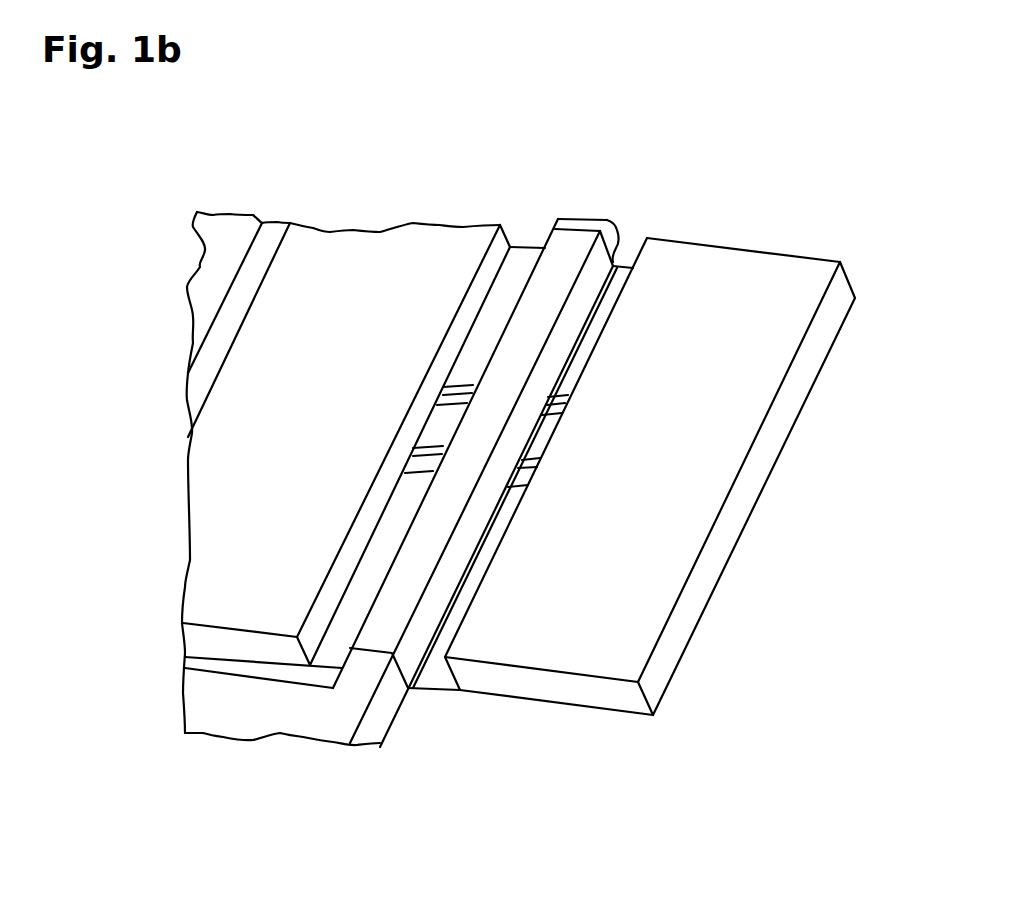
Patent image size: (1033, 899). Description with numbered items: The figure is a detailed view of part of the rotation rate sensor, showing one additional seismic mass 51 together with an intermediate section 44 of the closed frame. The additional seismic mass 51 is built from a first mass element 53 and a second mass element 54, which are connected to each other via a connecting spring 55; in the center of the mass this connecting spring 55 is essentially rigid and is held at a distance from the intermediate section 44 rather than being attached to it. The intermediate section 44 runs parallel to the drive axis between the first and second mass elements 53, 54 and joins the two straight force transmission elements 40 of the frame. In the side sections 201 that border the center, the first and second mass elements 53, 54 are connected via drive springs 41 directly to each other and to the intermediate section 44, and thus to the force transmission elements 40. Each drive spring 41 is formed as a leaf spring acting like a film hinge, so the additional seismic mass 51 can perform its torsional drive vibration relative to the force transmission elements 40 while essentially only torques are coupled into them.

The force transmission element 40 is at (250, 705).
The drive spring 41 is at (517, 275).
The intermediate section 44 is at (385, 623).
The additional seismic mass 51 is at (702, 793).
The first mass element 53 is at (635, 597).
The second mass element 54 is at (242, 533).
The connecting spring 55 is at (540, 438).
The side section 201 is at (619, 320).